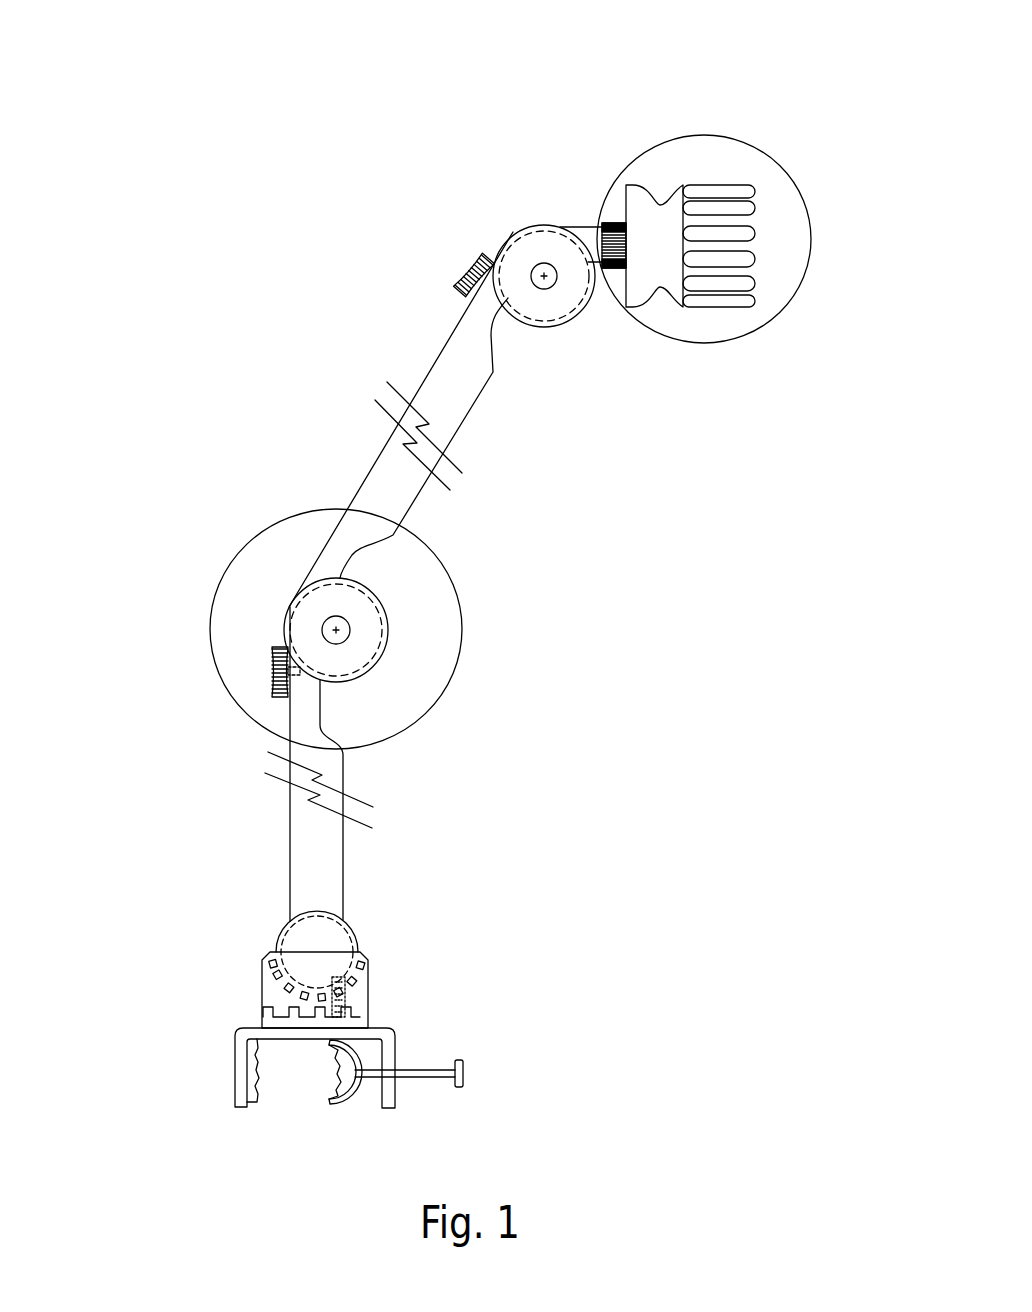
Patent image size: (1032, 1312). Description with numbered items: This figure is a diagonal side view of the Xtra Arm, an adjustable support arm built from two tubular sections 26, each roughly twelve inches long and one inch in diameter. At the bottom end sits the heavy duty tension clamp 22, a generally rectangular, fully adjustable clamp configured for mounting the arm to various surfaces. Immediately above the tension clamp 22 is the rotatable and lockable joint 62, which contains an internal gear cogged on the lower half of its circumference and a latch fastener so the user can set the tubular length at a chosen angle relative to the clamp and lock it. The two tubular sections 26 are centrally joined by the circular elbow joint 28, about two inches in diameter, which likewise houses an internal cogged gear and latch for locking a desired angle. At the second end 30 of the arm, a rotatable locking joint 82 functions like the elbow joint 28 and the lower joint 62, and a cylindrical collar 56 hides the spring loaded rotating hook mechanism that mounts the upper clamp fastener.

The tension clamp 22 is at (393, 1050).
The tubular sections 26 is at (458, 423).
The elbow joint 28 is at (263, 533).
The second end 30 is at (702, 135).
The cylindrical collar 56 is at (612, 268).
The rotatable and lockable joint 62 is at (368, 992).
The rotatable locking joint 82 is at (513, 233).